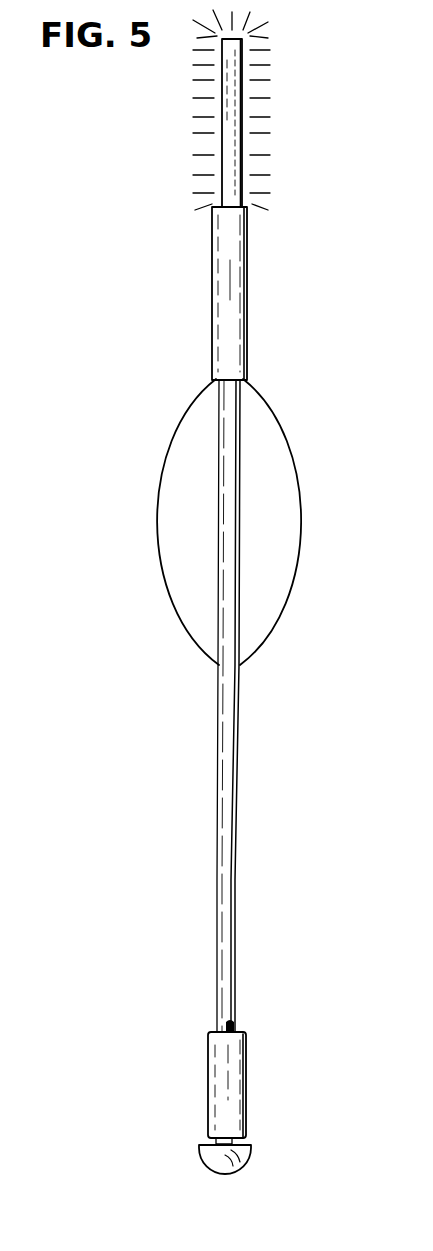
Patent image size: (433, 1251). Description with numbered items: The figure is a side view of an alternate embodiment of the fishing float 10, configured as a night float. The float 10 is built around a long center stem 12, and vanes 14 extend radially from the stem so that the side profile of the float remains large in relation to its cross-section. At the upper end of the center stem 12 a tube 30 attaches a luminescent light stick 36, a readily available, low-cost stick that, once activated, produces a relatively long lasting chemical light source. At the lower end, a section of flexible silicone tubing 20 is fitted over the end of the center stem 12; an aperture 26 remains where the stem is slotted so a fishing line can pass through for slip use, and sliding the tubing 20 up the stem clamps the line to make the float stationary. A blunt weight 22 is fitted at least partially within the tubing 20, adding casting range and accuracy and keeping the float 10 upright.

The float 10 is at (306, 377).
The center stem 12 is at (237, 751).
The vanes 14 is at (288, 506).
The silicone tubing 20 is at (243, 1079).
The weight 22 is at (248, 1162).
The aperture 26 is at (235, 1014).
The tube 30 is at (240, 270).
The luminescent light stick 36 is at (233, 153).